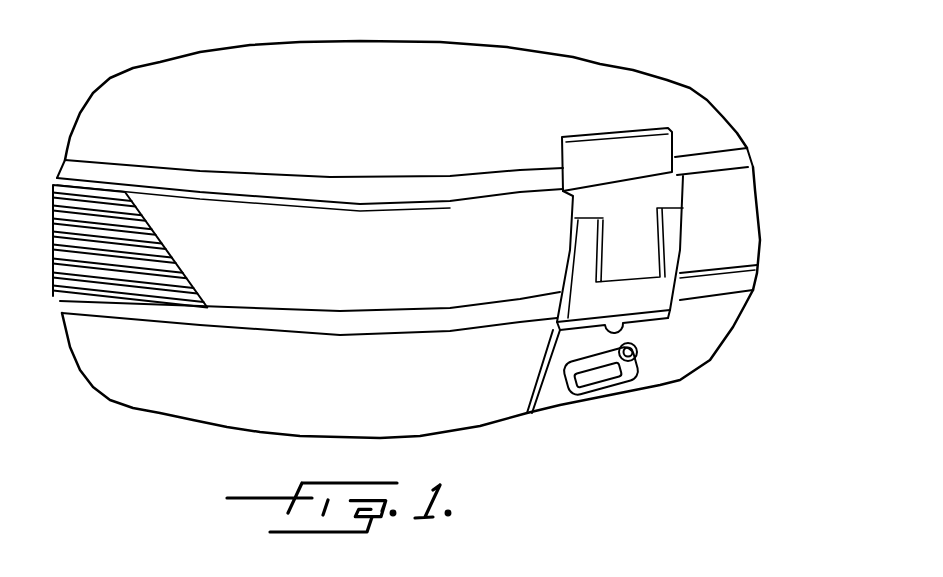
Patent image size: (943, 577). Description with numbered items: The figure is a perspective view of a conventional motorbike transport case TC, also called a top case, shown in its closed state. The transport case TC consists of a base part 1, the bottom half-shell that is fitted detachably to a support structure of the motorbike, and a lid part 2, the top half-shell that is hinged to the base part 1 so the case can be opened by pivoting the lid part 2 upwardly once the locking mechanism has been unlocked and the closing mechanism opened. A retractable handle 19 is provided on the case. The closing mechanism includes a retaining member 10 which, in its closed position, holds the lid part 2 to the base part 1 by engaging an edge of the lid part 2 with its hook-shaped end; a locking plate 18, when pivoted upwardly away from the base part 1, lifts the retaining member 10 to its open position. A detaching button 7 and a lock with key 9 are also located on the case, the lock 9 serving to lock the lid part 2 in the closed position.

The transport case TC is at (708, 74).
The base part 1 is at (255, 415).
The lid part 2 is at (497, 63).
The retaining member 10 is at (670, 198).
The handle 19 is at (652, 316).
The detaching button 7 is at (594, 392).
The locking plate 18 is at (563, 390).
The lock with key 9 is at (633, 361).